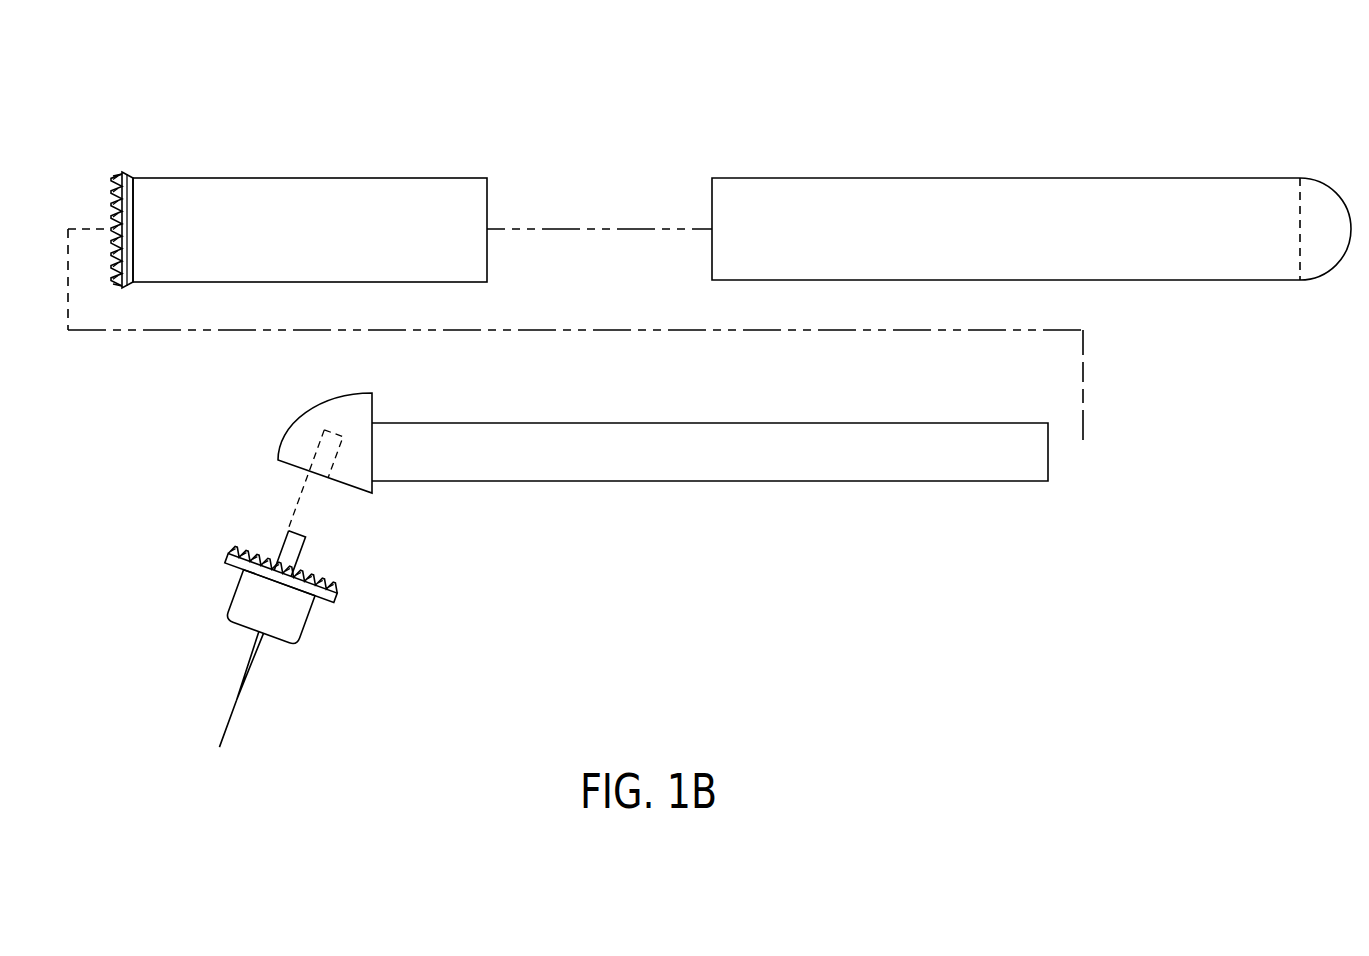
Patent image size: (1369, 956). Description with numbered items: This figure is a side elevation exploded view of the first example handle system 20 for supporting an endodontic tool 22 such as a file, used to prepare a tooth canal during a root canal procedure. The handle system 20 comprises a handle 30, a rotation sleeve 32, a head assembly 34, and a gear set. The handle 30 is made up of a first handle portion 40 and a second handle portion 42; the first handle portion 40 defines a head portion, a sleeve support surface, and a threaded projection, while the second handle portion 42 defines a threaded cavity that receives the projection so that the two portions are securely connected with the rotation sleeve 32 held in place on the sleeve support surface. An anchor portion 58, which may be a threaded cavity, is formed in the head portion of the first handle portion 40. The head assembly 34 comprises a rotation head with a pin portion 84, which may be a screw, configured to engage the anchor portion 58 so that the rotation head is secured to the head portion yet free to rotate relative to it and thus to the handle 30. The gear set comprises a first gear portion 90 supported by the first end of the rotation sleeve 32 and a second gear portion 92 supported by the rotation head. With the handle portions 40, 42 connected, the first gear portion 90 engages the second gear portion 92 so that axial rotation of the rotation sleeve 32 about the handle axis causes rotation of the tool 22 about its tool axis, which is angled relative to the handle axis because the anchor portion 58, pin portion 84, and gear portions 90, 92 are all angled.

The handle system 20 is at (1085, 108).
The endodontic tool 22 is at (240, 706).
The handle 30 is at (1180, 372).
The rotation sleeve 32 is at (280, 178).
The head assembly 34 is at (352, 625).
The first handle portion 40 is at (684, 432).
The second handle portion 42 is at (887, 188).
The anchor portion 58 is at (336, 466).
The pin portion 84 is at (283, 548).
The first gear portion 90 is at (108, 190).
The second gear portion 92 is at (233, 562).